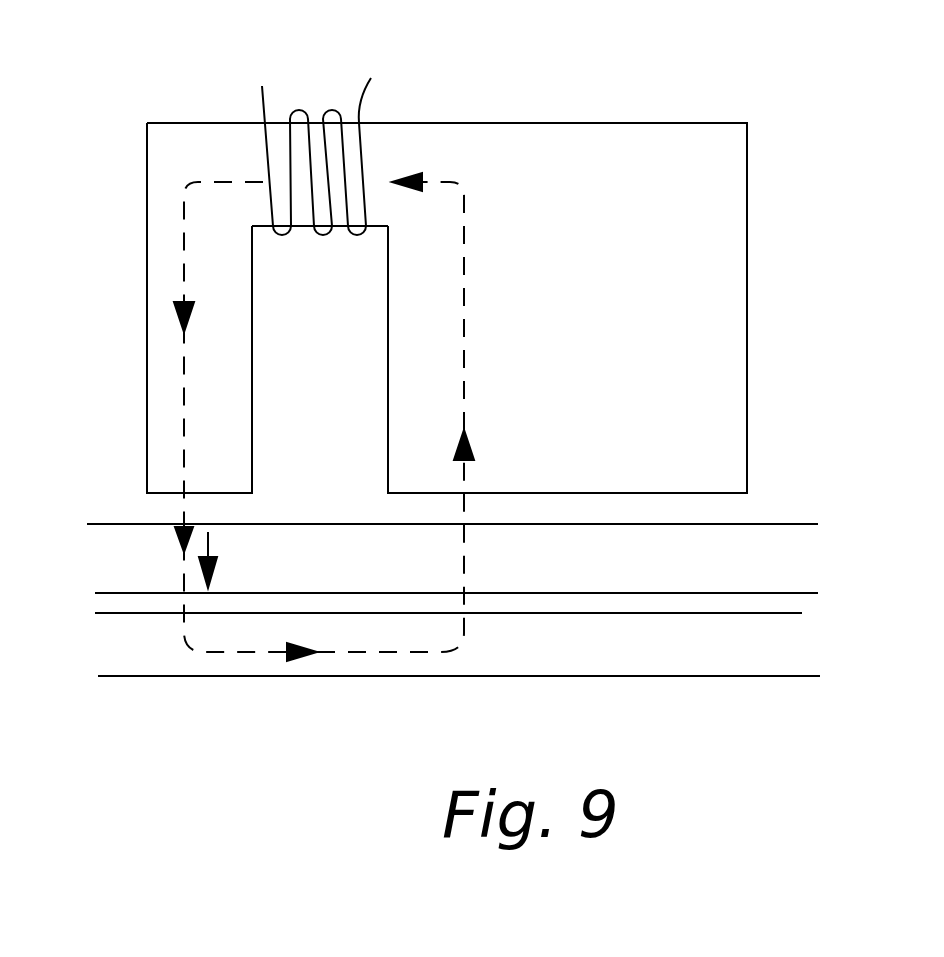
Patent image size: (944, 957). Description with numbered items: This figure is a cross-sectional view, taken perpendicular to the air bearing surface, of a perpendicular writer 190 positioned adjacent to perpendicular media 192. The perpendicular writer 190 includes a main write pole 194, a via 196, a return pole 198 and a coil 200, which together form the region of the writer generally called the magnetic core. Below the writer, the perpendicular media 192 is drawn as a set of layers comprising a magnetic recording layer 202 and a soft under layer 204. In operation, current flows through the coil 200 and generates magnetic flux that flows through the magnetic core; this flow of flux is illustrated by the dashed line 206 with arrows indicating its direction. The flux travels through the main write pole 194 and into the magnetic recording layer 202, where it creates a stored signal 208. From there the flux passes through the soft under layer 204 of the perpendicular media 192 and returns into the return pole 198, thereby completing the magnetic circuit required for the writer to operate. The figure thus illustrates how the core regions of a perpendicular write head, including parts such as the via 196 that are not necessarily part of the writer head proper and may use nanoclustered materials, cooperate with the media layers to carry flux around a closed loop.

The perpendicular writer 190 is at (104, 140).
The perpendicular media 192 is at (283, 760).
The main write pole 194 is at (162, 375).
The via 196 is at (365, 155).
The return pole 198 is at (697, 263).
The coil 200 is at (262, 90).
The magnetic recording layer 202 is at (735, 550).
The soft under layer 204 is at (680, 652).
The dashed line 206 is at (482, 202).
The stored signal 208 is at (208, 548).